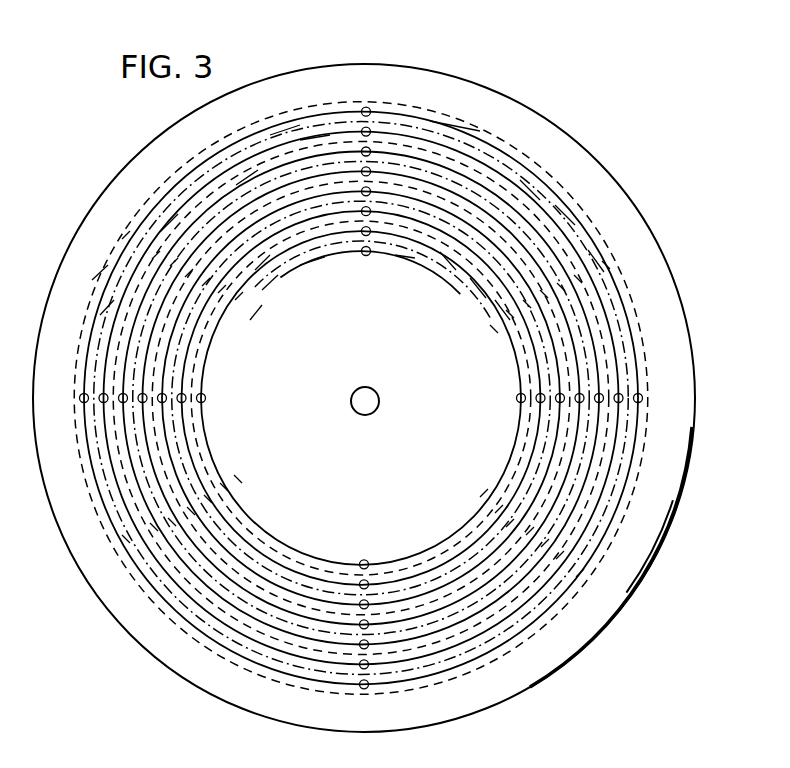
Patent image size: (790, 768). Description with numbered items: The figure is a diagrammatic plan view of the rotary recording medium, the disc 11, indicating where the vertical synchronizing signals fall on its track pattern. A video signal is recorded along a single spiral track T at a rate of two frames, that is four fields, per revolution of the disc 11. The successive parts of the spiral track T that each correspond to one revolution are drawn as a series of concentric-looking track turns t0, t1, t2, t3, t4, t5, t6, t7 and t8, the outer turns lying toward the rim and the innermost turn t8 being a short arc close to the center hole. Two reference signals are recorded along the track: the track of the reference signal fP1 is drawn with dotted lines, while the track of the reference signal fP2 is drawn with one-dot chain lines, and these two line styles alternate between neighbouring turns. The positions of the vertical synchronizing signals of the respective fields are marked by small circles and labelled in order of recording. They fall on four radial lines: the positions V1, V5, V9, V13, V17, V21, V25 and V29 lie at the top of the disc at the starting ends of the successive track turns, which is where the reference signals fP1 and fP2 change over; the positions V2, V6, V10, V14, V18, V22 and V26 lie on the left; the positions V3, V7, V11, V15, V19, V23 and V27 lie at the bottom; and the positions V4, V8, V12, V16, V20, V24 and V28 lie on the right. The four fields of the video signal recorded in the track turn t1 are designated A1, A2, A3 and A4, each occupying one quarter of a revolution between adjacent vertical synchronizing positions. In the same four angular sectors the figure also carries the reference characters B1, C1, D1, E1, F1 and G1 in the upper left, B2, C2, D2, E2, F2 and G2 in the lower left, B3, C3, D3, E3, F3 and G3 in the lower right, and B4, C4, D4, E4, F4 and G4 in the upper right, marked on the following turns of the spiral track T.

The disc 11 is at (668, 273).
The spiral track T is at (179, 182).
The track t0 is at (457, 122).
The track turn t1 is at (282, 128).
The track turn t2 is at (316, 135).
The track turn t3 is at (246, 178).
The track turn t4 is at (167, 225).
The track turn t5 is at (262, 265).
The track turn t6 is at (270, 283).
The track turn t7 is at (258, 312).
The track turn t8 is at (313, 262).
The reference signal fP1 is at (100, 272).
The reference signal fP2 is at (107, 307).
The vertical synchronizing signal position V1 is at (370, 110).
The vertical synchronizing signal position V2 is at (79, 399).
The vertical synchronizing signal position V3 is at (359, 683).
The vertical synchronizing signal position V4 is at (643, 400).
The vertical synchronizing signal position V5 is at (370, 132).
The vertical synchronizing signal position V6 is at (100, 403).
The vertical synchronizing signal position V7 is at (359, 663).
The vertical synchronizing signal position V8 is at (623, 403).
The vertical synchronizing signal position V9 is at (370, 152).
The vertical synchronizing signal position V10 is at (119, 395).
The vertical synchronizing signal position V11 is at (359, 643).
The vertical synchronizing signal position V12 is at (603, 396).
The vertical synchronizing signal position V13 is at (370, 171).
The vertical synchronizing signal position V14 is at (139, 403).
The vertical synchronizing signal position V15 is at (359, 623).
The vertical synchronizing signal position V16 is at (576, 396).
The vertical synchronizing signal position V17 is at (370, 191).
The vertical synchronizing signal position V18 is at (166, 395).
The vertical synchronizing signal position V19 is at (359, 603).
The vertical synchronizing signal position V20 is at (557, 404).
The vertical synchronizing signal position V21 is at (370, 211).
The vertical synchronizing signal position V22 is at (186, 403).
The vertical synchronizing signal position V23 is at (359, 583).
The vertical synchronizing signal position V24 is at (537, 403).
The vertical synchronizing signal position V25 is at (370, 231).
The vertical synchronizing signal position V26 is at (206, 399).
The vertical synchronizing signal position V27 is at (365, 560).
The vertical synchronizing signal position V28 is at (516, 400).
The vertical synchronizing signal position V29 is at (367, 256).
The field A1 is at (122, 239).
The sector B1 is at (152, 259).
The sector C1 is at (170, 266).
The sector D1 is at (185, 277).
The sector E1 is at (202, 286).
The sector F1 is at (218, 293).
The sector G1 is at (235, 300).
The field A2 is at (130, 543).
The sector B2 is at (158, 531).
The sector C2 is at (176, 526).
The sector D2 is at (195, 515).
The sector E2 is at (212, 503).
The sector F2 is at (228, 491).
The sector G2 is at (242, 483).
The field A3 is at (576, 577).
The sector B3 is at (556, 559).
The sector C3 is at (541, 547).
The sector D3 is at (526, 535).
The sector E3 is at (506, 527).
The sector F3 is at (495, 513).
The sector G3 is at (480, 497).
The field A4 is at (610, 269).
The sector B4 is at (582, 283).
The sector C4 is at (565, 291).
The sector D4 is at (548, 298).
The sector E4 is at (531, 308).
The sector F4 is at (514, 318).
The sector G4 is at (498, 333).